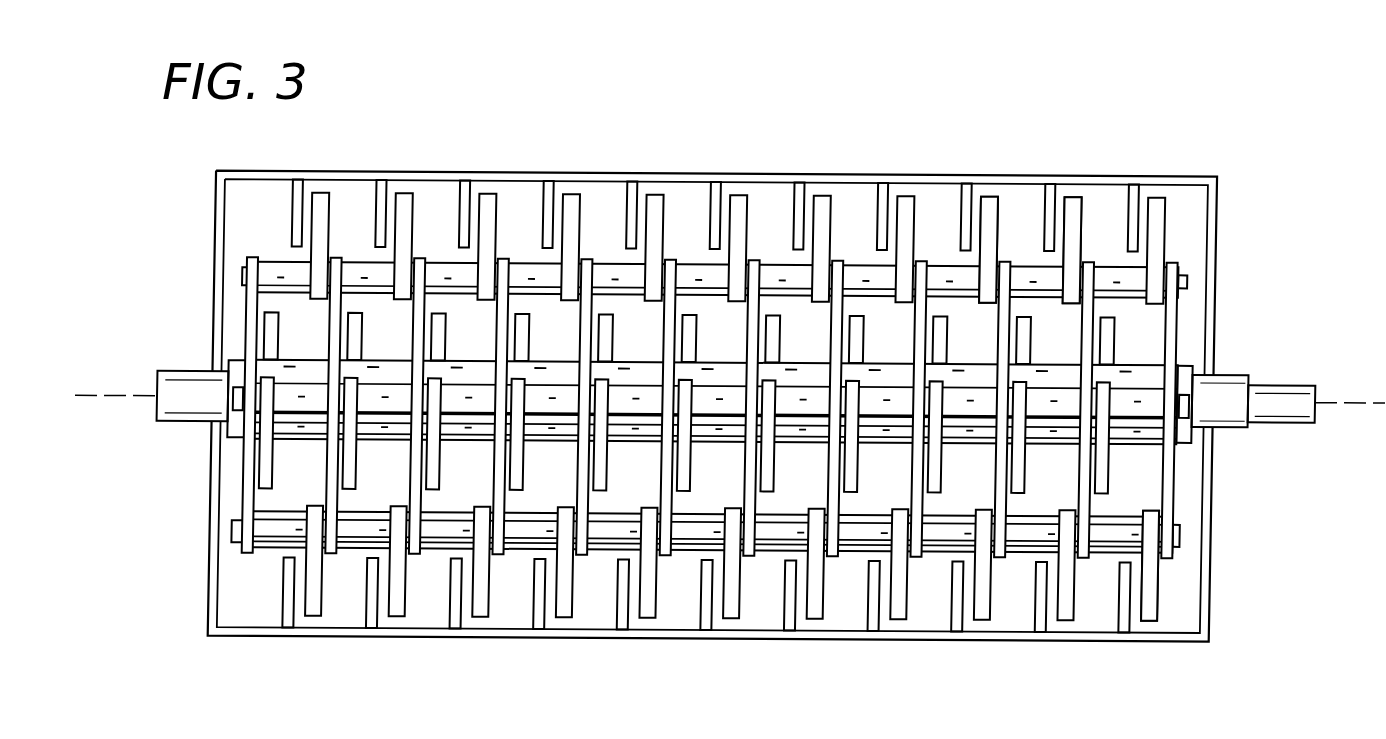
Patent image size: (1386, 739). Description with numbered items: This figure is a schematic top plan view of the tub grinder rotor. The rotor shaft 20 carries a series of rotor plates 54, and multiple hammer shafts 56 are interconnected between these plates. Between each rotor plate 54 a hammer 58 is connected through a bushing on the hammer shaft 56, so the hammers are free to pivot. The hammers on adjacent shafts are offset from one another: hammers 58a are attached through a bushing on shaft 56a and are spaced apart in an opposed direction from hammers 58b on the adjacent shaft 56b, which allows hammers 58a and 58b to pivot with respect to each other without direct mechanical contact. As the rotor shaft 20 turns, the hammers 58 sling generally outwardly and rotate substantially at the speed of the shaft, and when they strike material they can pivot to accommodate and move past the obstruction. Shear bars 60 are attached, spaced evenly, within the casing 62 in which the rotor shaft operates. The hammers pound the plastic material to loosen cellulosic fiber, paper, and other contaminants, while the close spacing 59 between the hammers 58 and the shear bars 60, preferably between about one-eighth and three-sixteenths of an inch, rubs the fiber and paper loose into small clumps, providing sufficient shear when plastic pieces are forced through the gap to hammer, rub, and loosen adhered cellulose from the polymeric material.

The rotor shaft 20 is at (1230, 383).
The rotor plates 54 is at (1177, 328).
The hammer shafts 56 is at (1187, 280).
The hammer shaft 56a is at (1178, 532).
The adjacent hammer shaft 56b is at (1193, 407).
The hammer 58 is at (1075, 198).
The hammers 58a is at (1150, 587).
The hammers 58b is at (1105, 477).
The close spacing 59 is at (975, 187).
The shear bars 60 is at (873, 195).
The casing 62 is at (1207, 625).